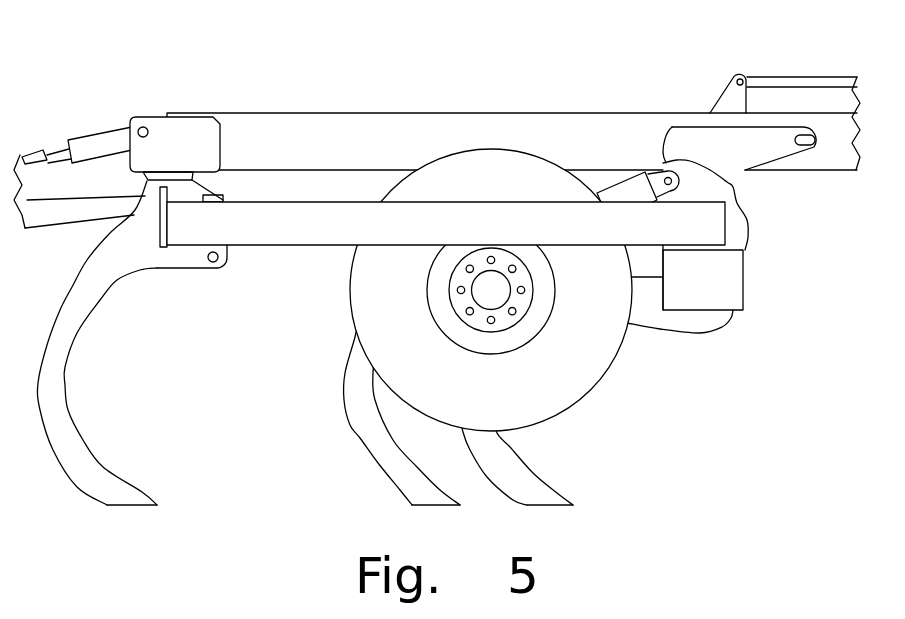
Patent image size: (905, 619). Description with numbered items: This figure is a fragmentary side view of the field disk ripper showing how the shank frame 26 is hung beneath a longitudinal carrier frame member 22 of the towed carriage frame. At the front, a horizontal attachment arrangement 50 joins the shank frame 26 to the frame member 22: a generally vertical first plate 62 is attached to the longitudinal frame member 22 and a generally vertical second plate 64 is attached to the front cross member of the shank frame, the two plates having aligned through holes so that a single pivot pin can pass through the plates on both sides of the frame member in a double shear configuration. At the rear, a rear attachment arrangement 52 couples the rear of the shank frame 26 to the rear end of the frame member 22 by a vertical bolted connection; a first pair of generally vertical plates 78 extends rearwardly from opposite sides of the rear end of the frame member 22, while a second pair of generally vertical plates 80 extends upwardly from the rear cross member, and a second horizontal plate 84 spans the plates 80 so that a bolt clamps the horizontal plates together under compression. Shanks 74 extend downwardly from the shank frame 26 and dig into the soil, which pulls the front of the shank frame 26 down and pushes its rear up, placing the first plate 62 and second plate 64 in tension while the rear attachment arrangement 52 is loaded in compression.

The carrier frame member 22 is at (367, 112).
The shank frame 26 is at (289, 261).
The horizontal attachment arrangement 50 is at (699, 86).
The rear attachment arrangement 52 is at (173, 88).
The first plate 62 is at (777, 142).
The second plate 64 is at (717, 187).
The shank 74 is at (142, 493).
The first pair of generally vertical plates 78 is at (163, 137).
The second pair of generally vertical plates 80 is at (147, 195).
The second horizontal plate 84 is at (143, 177).